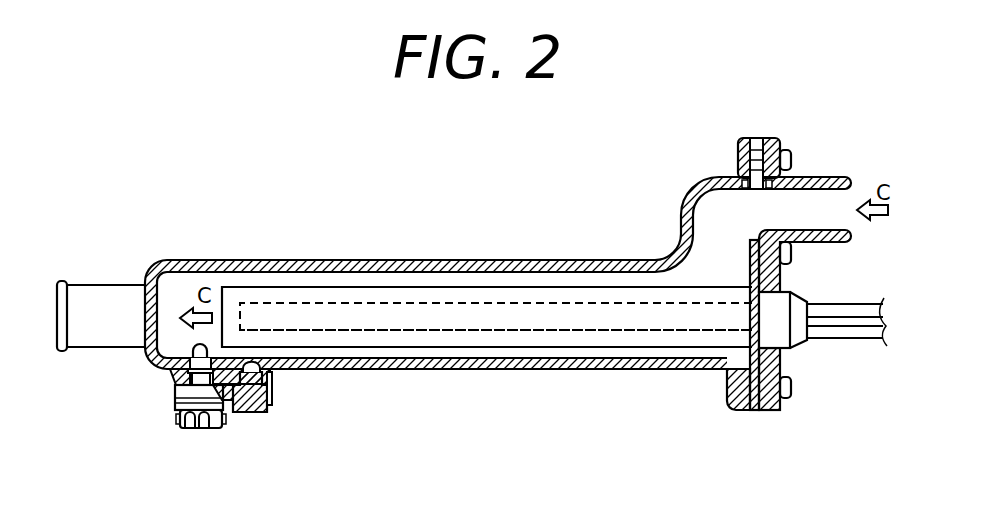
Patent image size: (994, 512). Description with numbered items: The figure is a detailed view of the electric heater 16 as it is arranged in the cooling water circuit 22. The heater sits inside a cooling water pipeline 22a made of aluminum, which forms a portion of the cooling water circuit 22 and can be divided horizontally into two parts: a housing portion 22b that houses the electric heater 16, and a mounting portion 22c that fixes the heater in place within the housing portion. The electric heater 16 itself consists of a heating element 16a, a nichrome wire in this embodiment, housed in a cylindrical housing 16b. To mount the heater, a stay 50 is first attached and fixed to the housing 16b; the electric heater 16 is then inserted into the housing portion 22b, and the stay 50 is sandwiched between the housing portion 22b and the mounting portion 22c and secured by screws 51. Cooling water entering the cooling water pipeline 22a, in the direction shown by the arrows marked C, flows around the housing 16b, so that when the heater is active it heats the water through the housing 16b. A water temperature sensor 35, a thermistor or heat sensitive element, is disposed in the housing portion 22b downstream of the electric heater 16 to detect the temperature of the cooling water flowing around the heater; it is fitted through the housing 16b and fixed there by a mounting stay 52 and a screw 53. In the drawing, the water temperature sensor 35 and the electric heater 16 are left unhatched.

The cooling water circuit 22 is at (498, 299).
The cooling water pipeline 22a is at (289, 255).
The housing portion 22b is at (493, 370).
The mounting portion 22c is at (760, 138).
The electric heater 16 is at (487, 364).
The heating element 16a is at (368, 312).
The housing 16b is at (440, 332).
The water temperature sensor 35 is at (178, 424).
The stay 50 is at (750, 270).
The screws 51 is at (792, 163).
The mounting stay 52 is at (273, 402).
The screw 53 is at (246, 413).